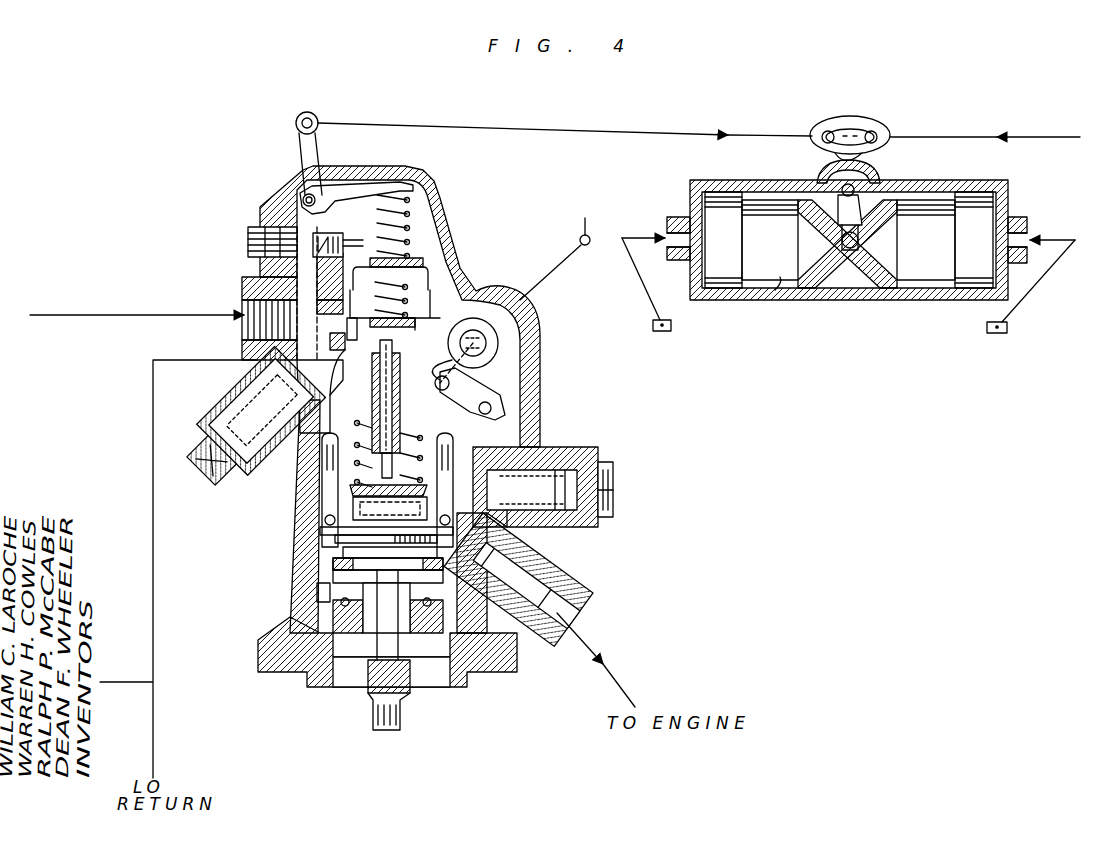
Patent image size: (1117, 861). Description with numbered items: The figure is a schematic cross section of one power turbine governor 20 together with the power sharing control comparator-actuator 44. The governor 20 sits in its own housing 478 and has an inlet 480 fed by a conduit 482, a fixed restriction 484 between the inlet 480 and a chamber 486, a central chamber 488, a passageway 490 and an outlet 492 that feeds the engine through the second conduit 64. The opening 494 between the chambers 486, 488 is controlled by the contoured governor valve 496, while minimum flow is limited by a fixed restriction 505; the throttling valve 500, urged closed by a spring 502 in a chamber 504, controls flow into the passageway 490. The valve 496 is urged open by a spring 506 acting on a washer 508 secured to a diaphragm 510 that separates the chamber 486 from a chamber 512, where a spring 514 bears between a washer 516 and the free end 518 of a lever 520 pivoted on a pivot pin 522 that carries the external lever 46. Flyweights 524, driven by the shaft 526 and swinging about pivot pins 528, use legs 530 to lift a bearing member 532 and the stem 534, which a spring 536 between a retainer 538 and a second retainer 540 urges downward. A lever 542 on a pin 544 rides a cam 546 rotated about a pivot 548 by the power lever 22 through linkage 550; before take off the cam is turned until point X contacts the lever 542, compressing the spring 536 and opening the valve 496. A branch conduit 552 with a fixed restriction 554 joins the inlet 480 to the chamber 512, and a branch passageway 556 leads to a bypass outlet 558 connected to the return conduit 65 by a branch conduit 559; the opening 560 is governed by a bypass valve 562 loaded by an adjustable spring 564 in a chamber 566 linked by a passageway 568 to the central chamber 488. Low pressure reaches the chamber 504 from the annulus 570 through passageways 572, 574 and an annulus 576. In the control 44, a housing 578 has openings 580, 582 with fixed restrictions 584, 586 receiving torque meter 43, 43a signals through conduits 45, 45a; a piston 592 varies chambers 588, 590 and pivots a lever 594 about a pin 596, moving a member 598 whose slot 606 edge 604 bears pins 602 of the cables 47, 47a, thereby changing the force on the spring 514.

The power turbine governor 20 is at (226, 173).
The power lever 22 is at (581, 219).
The torque meter 43 is at (671, 328).
The torque meter 43a is at (1007, 328).
The power sharing control comparator-actuator 44 is at (935, 176).
The conduit 45 is at (649, 279).
The conduit 45a is at (1035, 297).
The lever 46 is at (297, 139).
The cable 47 is at (518, 128).
The cable 47a is at (1023, 130).
The second conduit 64 is at (614, 680).
The return conduit 65 is at (128, 683).
The housing 478 is at (348, 168).
The inlet 480 is at (247, 290).
The conduit 482 is at (127, 313).
The fixed restriction 484 is at (320, 312).
The chamber 486 is at (413, 308).
The central chamber 488 is at (522, 331).
The passageway 490 is at (508, 533).
The outlet 492 is at (560, 580).
The opening 494 is at (357, 320).
The contoured governor valve 496 is at (495, 336).
The throttling valve 500 is at (553, 447).
The spring 502 is at (577, 449).
The chamber 504 is at (568, 492).
The fixed restriction 505 is at (448, 305).
The spring 506 is at (435, 297).
The washer 508 is at (430, 262).
The diaphragm 510 is at (425, 262).
The chamber 512 is at (356, 200).
The spring 514 is at (412, 230).
The washer 516 is at (420, 250).
The free end 518 is at (412, 189).
The lever 520 is at (337, 190).
The pivot pin 522 is at (302, 199).
The flyweights 524 is at (385, 458).
The shaft 526 is at (410, 662).
The pivot pins 528 is at (343, 552).
The legs 530 is at (300, 617).
The bearing member 532 is at (333, 562).
The stem 534 is at (367, 497).
The spring 536 is at (380, 490).
The retainer 538 is at (352, 503).
The second retainer 540 is at (367, 450).
The lever 542 is at (485, 396).
The pin 544 is at (500, 408).
The cam 546 is at (505, 381).
The pivot 548 is at (490, 346).
The linkage 550 is at (557, 268).
The branch conduit 552 is at (298, 270).
The fixed restriction 554 is at (313, 243).
The branch passageway 556 is at (338, 340).
The bypass outlet 558 is at (248, 422).
The branch conduit 559 is at (152, 537).
The opening 560 is at (338, 371).
The bypass valve 562 is at (253, 382).
The adjustable spring 564 is at (207, 420).
The chamber 566 is at (253, 420).
The passageway 568 is at (227, 465).
The annulus 570 is at (247, 342).
The passageway 572 is at (353, 528).
The passageway 574 is at (520, 643).
The annulus 576 is at (478, 656).
The housing 578 is at (863, 297).
The opening 580 is at (690, 237).
The opening 582 is at (1055, 236).
The fixed restriction 584 is at (707, 235).
The fixed restriction 586 is at (1008, 233).
The chamber 588 is at (723, 240).
The chamber 590 is at (974, 240).
The piston 592 is at (777, 279).
The lever 594 is at (860, 214).
The pin 596 is at (858, 196).
The member 598 is at (851, 116).
The pins 602 is at (827, 131).
The edge 604 is at (826, 148).
The slot 606 is at (855, 130).
The point X is at (506, 378).